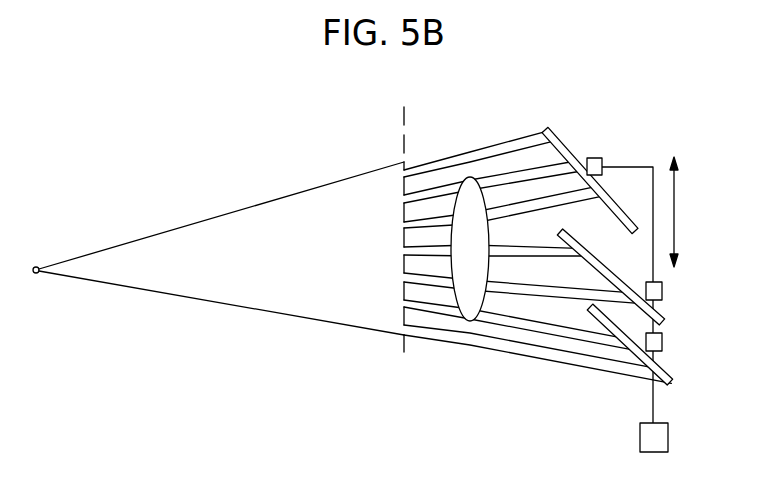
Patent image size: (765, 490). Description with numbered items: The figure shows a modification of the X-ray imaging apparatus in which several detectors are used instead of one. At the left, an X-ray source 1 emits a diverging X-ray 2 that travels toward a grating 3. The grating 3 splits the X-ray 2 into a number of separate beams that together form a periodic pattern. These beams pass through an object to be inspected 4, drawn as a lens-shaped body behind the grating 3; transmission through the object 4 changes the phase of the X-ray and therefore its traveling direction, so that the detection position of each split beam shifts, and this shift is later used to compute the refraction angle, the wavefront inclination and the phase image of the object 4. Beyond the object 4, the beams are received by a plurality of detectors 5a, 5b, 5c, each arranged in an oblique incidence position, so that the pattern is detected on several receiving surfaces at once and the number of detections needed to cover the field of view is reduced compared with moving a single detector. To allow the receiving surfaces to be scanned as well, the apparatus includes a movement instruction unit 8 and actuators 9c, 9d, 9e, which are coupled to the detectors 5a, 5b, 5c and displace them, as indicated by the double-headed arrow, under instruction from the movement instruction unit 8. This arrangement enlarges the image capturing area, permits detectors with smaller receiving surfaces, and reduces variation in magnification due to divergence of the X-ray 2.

The X-ray source 1 is at (36, 266).
The X-ray 2 is at (245, 207).
The grating 3 is at (402, 116).
The object to be inspected 4 is at (470, 177).
The detector 5a is at (553, 144).
The detector 5b is at (606, 274).
The detector 5c is at (668, 378).
The movement instruction unit 8 is at (640, 438).
The actuator 9c is at (595, 157).
The actuator 9d is at (663, 290).
The actuator 9e is at (663, 341).